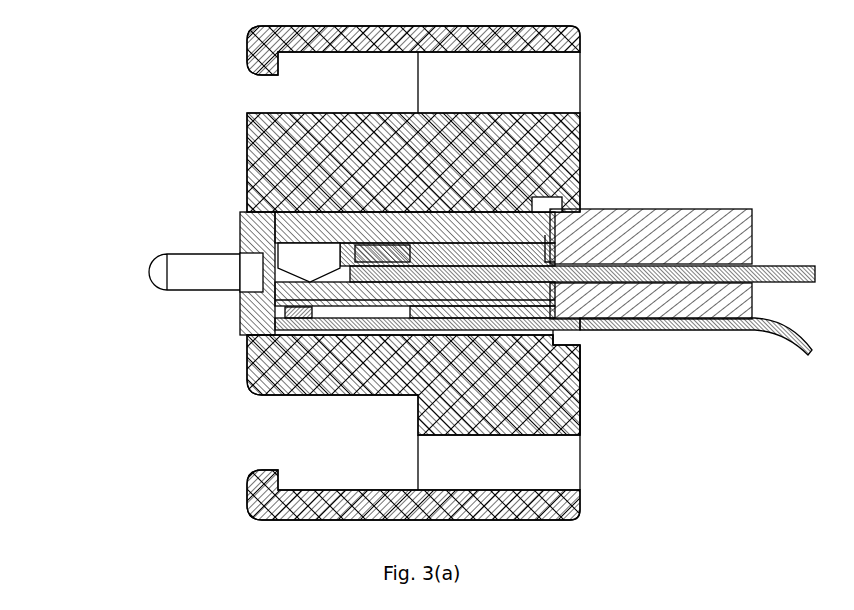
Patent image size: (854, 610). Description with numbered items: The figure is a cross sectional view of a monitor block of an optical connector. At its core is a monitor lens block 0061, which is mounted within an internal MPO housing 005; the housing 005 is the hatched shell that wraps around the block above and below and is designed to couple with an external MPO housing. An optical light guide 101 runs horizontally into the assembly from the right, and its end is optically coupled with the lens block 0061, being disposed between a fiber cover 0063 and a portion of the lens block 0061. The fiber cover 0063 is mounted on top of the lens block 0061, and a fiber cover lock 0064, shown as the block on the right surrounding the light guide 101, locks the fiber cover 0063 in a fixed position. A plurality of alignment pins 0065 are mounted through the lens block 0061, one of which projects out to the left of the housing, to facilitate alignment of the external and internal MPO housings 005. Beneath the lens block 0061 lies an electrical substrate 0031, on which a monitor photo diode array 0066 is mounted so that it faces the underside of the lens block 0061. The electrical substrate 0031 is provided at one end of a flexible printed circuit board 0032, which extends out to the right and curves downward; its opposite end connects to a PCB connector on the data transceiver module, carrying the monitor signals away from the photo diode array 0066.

The internal MPO housing 005 is at (248, 33).
The monitor lens block 0061 is at (325, 290).
The fiber cover 0063 is at (387, 255).
The fiber cover lock 0064 is at (562, 238).
The optical light guide 101 is at (614, 266).
The alignment pin 0065 is at (201, 268).
The monitor photo diode array 0066 is at (300, 313).
The electrical substrate 0031 is at (530, 323).
The flexible printed circuit board 0032 is at (650, 327).